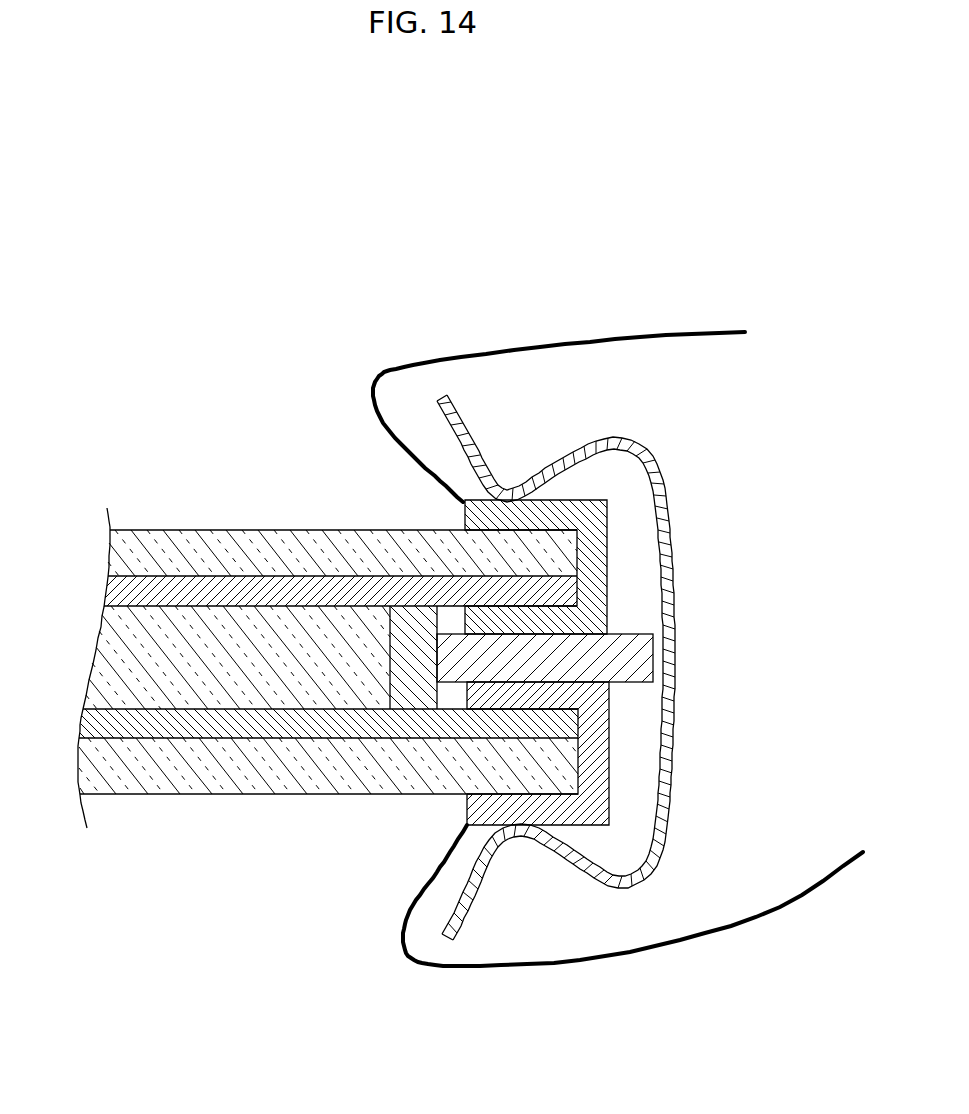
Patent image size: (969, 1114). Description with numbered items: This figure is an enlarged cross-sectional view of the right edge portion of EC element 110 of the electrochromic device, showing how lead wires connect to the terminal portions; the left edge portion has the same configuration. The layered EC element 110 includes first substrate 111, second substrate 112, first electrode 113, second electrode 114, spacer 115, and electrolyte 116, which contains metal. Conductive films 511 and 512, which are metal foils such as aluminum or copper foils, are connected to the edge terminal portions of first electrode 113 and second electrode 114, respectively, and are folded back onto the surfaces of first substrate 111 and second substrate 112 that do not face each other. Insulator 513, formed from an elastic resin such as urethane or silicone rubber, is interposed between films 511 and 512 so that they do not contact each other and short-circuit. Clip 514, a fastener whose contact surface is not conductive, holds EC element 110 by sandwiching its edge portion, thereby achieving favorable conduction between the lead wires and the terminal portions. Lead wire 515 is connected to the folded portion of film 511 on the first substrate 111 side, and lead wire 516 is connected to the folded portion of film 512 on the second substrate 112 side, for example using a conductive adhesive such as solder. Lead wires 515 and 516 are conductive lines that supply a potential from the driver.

The EC element 110 is at (305, 596).
The first substrate 111 is at (213, 547).
The second substrate 112 is at (187, 780).
The first electrode 113 is at (267, 590).
The second electrode 114 is at (267, 725).
The spacer 115 is at (408, 625).
The electrolyte 116 is at (120, 655).
The conductive film 511 is at (600, 568).
The conductive film 512 is at (600, 764).
The insulator 513 is at (645, 655).
The clip 514 is at (663, 480).
The lead wire 515 is at (393, 368).
The lead wire 516 is at (723, 933).